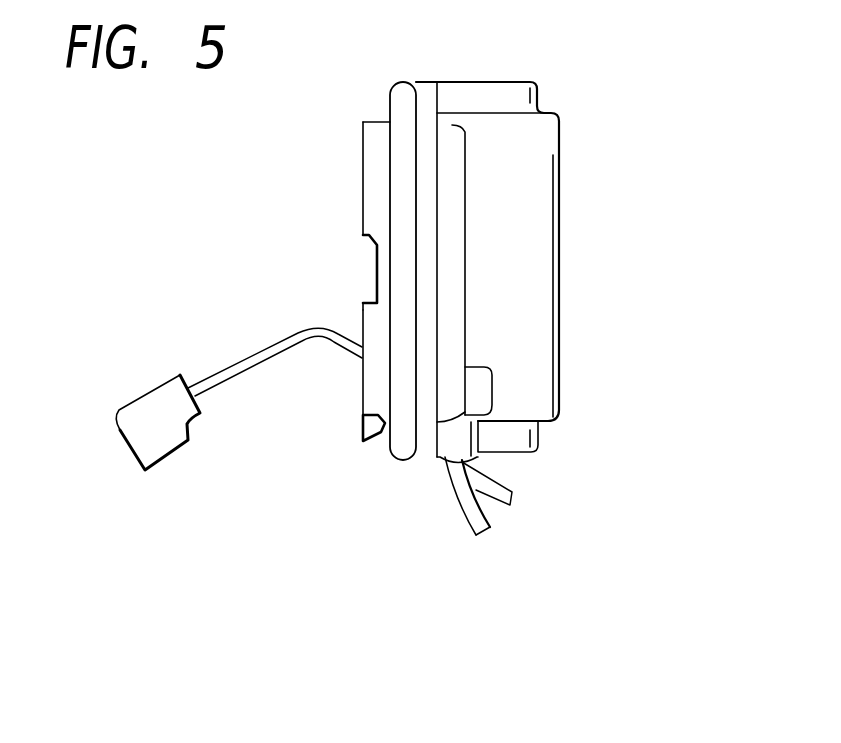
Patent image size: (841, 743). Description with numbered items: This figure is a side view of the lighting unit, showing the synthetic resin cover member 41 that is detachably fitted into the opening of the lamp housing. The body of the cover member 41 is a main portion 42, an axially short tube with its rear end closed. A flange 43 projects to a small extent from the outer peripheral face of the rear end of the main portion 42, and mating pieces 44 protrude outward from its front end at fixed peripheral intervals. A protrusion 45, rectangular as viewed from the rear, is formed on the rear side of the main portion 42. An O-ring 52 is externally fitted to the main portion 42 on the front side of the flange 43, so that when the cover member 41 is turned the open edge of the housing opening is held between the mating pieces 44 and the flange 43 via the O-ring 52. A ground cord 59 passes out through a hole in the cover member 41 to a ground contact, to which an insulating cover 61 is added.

The cover member 41 is at (562, 253).
The main portion 42 is at (368, 388).
The flange 43 is at (431, 107).
The mating pieces 44 is at (368, 277).
The protrusion 45 is at (548, 372).
The O-ring 52 is at (398, 172).
The ground cord 59 is at (223, 368).
The insulating cover 61 is at (133, 440).